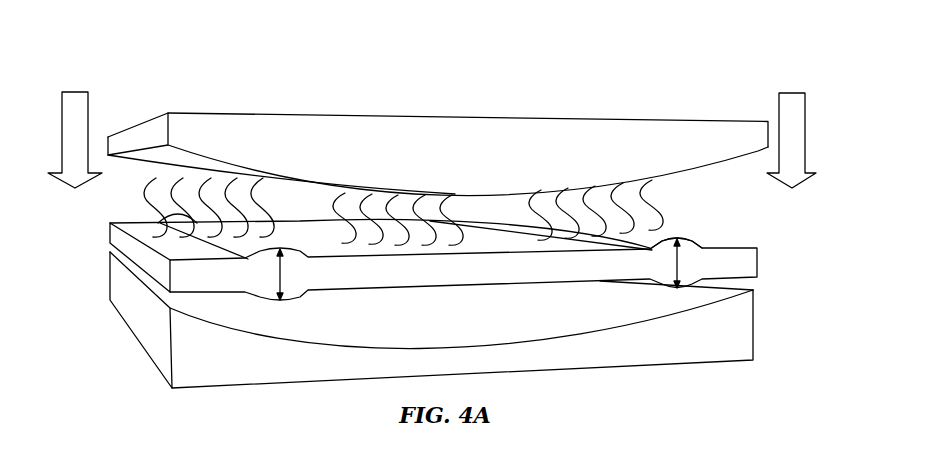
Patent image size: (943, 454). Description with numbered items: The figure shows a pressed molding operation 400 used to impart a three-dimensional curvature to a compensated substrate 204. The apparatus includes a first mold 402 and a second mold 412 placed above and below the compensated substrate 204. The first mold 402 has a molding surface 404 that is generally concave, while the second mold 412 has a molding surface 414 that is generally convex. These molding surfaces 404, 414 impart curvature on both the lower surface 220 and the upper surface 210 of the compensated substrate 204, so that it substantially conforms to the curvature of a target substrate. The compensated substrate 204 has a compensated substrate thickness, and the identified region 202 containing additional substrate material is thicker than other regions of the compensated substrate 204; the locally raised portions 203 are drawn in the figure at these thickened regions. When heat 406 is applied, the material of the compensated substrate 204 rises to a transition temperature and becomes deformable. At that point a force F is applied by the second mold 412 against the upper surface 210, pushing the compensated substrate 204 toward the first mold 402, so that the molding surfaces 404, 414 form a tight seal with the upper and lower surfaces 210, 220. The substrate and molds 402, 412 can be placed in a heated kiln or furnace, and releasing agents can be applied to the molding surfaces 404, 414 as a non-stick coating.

The pressed molding operation 400 is at (184, 84).
The second mold 412 is at (459, 172).
The molding surface 414 is at (154, 166).
The heat 406 is at (403, 211).
The upper surface 210 is at (297, 246).
The compensated substrate 204 is at (433, 240).
The identified region 202 is at (433, 240).
The dimple 203 is at (688, 235).
The lower surface 220 is at (383, 297).
The first mold 402 is at (431, 320).
The molding surface 404 is at (569, 315).